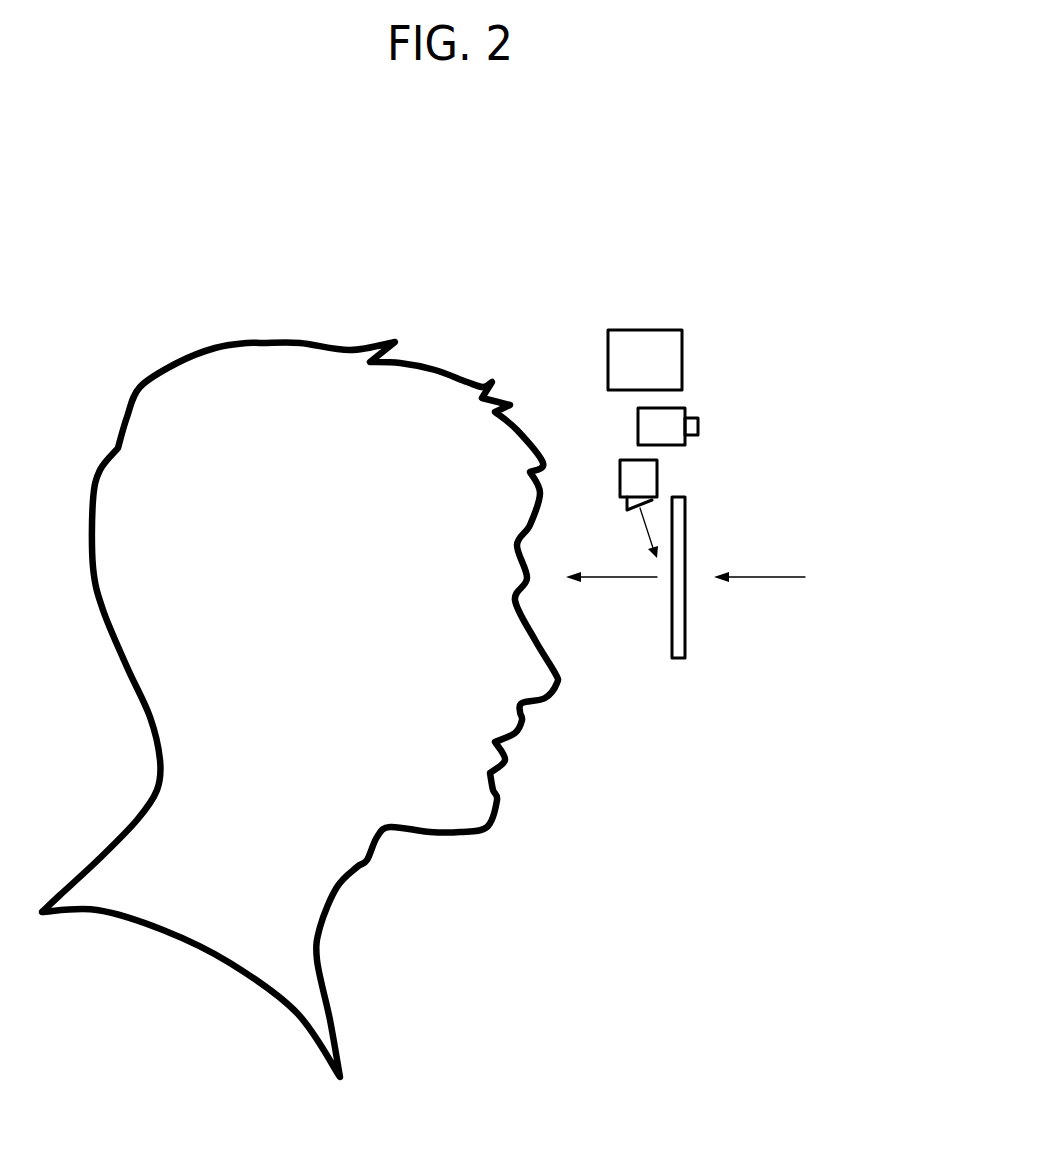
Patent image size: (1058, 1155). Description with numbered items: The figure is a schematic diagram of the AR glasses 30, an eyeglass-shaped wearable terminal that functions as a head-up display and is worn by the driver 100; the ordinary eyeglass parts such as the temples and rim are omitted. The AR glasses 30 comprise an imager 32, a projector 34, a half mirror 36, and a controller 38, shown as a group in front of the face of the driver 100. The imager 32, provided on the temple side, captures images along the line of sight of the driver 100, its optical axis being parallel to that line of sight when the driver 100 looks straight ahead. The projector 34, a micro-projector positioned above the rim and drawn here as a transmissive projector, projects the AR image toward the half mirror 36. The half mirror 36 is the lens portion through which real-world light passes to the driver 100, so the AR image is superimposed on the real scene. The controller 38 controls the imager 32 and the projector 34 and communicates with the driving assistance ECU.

The driver 100 is at (245, 342).
The AR glasses 30 is at (808, 322).
The controller 38 is at (682, 360).
The imager 32 is at (692, 415).
The projector 34 is at (657, 475).
The half mirror 36 is at (687, 530).